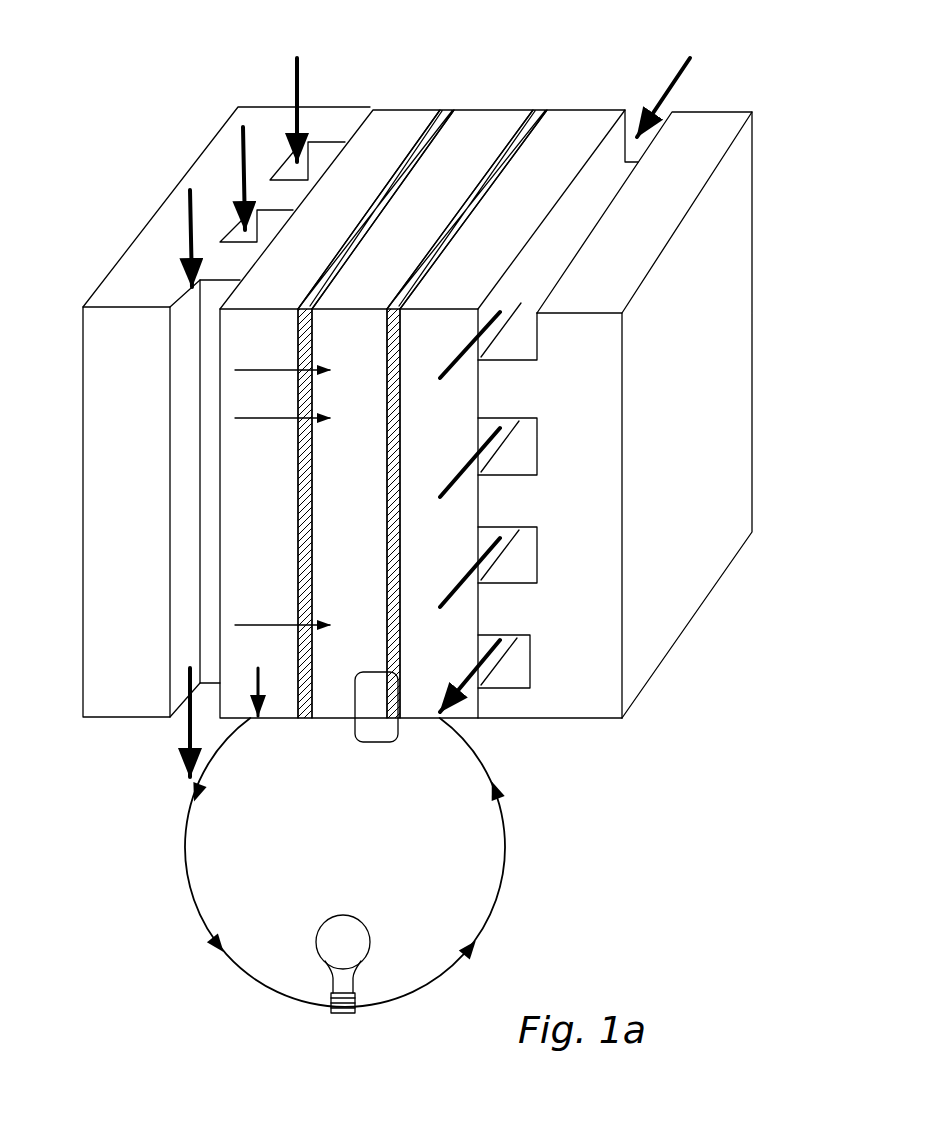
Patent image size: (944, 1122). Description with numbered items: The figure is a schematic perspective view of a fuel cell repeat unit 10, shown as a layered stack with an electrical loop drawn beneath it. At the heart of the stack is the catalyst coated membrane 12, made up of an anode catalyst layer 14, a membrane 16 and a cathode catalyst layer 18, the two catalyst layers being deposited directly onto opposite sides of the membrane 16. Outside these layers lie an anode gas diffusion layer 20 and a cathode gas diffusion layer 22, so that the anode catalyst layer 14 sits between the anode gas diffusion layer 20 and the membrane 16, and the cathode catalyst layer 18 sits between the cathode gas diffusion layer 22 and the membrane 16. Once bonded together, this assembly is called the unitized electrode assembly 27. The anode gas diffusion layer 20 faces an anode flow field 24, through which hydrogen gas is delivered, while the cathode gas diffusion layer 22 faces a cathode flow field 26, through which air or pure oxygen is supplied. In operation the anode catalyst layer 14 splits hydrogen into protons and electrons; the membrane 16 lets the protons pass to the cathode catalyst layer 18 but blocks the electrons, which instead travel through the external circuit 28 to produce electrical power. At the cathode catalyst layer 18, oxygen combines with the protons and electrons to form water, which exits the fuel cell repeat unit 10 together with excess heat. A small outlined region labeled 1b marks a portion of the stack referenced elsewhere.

The fuel cell repeat unit 10 is at (125, 122).
The catalyst coated membrane 12 is at (550, 104).
The anode catalyst layer 14 is at (388, 193).
The membrane 16 is at (492, 145).
The cathode catalyst layer 18 is at (457, 223).
The anode gas diffusion layer 20 is at (398, 145).
The cathode gas diffusion layer 22 is at (584, 145).
The anode flow field 24 is at (323, 153).
The cathode flow field 26 is at (522, 345).
The unitized electrode assembly 27 is at (748, 100).
The external circuit 28 is at (187, 870).
The region shown in FIG. 1b is at (382, 743).